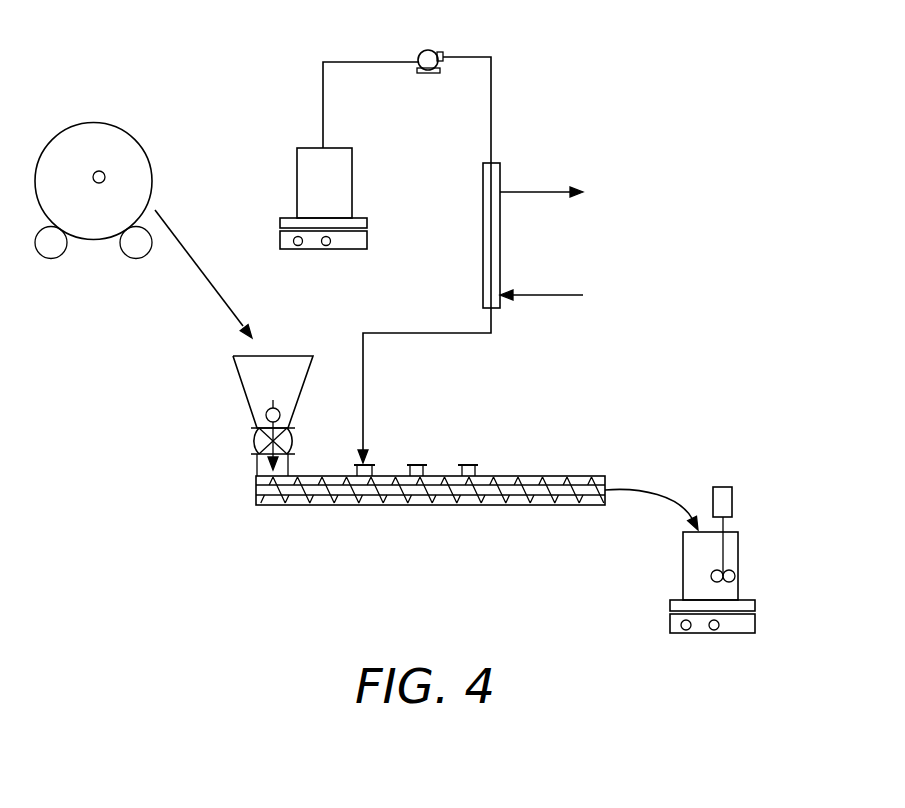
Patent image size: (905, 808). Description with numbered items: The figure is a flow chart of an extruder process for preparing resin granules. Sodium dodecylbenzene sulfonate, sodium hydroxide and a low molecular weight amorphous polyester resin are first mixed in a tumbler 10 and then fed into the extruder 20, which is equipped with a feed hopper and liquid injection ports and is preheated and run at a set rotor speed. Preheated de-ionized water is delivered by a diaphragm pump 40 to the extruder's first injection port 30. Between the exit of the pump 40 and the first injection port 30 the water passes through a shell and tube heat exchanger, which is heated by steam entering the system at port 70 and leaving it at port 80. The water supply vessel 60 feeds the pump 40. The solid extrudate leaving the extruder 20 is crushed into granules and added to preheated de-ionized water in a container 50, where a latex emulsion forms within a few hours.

The tumbler 10 is at (93, 122).
The extruder 20 is at (240, 441).
The first injection port 30 is at (373, 463).
The diaphragm pump 40 is at (428, 49).
The container 50 is at (683, 568).
The liquid supply vessel on stirrer 60 is at (369, 239).
The port 70 is at (543, 295).
The port 80 is at (543, 190).